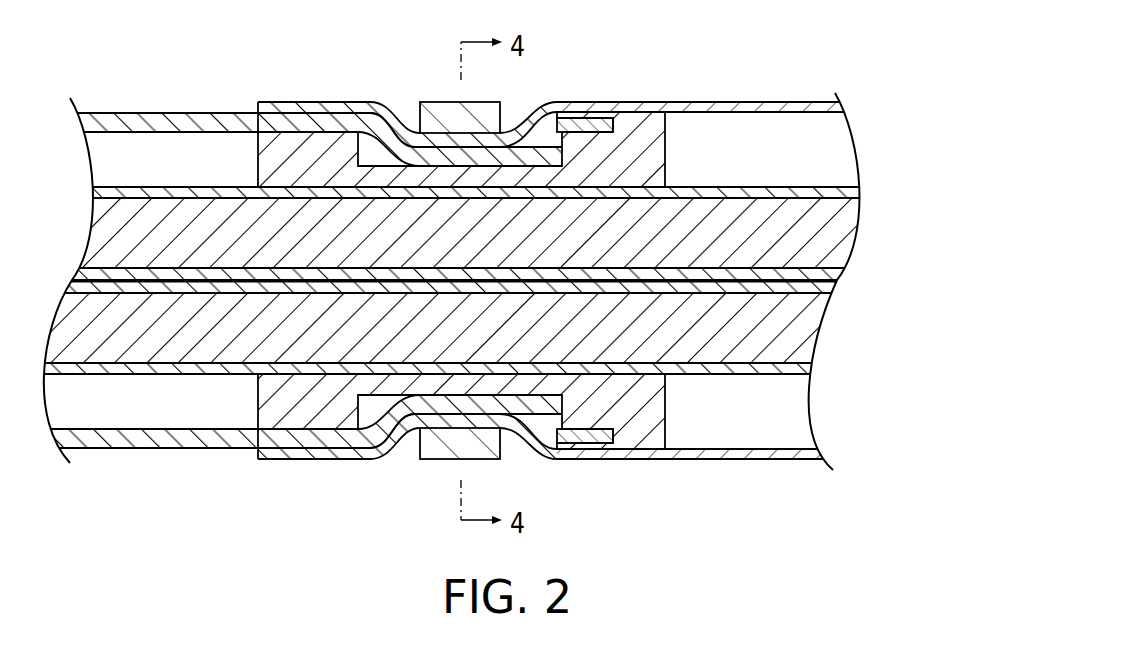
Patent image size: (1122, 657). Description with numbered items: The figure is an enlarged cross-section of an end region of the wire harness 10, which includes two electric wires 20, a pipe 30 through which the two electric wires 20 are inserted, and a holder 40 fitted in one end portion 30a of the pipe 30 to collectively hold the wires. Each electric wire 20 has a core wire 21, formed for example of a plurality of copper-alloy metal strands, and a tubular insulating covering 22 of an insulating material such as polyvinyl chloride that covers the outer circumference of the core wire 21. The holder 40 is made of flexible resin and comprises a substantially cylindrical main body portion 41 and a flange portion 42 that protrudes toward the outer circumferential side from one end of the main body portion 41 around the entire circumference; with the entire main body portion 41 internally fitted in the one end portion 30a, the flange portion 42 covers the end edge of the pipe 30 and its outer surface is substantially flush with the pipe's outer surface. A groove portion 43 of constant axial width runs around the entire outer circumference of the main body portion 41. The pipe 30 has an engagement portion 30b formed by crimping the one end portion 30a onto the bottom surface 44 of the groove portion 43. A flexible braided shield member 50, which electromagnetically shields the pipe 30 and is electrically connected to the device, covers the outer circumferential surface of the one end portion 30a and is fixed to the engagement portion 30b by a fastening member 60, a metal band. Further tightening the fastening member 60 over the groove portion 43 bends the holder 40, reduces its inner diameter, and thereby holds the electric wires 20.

The wire harness 10 is at (806, 47).
The electric wire 20 is at (913, 187).
The core wire 21 is at (843, 228).
The insulating covering 22 is at (858, 195).
The pipe 30 is at (162, 112).
The one end portion of the pipe 30a is at (318, 102).
The engagement portion 30b is at (406, 133).
The holder 40 is at (665, 152).
The main body portion 41 is at (592, 118).
The flange portion 42 is at (640, 102).
The groove portion 43 is at (553, 102).
The bottom surface of the groove portion 44 is at (503, 140).
The shield member 50 is at (740, 102).
The fastening member 60 is at (447, 101).